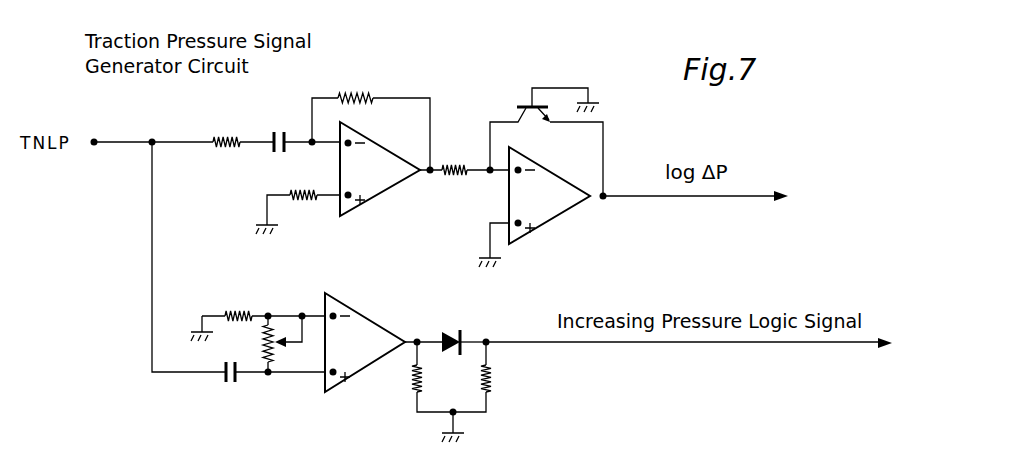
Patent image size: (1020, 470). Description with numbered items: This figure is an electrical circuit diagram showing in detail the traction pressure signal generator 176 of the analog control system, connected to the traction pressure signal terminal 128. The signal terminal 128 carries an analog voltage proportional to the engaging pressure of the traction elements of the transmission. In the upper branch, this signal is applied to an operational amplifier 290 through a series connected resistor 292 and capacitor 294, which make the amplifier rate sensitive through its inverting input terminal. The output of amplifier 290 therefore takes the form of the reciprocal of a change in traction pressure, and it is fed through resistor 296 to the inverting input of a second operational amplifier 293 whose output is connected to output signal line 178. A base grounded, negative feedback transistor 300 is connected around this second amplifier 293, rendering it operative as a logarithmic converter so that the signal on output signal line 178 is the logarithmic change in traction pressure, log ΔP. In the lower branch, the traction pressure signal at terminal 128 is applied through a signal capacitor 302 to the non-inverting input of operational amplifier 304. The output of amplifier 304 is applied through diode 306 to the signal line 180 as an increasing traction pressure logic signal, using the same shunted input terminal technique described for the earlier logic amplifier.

The traction pressure signal terminal 128 is at (95, 149).
The traction pressure signal generator 176 is at (345, 161).
The output signal line 178 is at (737, 200).
The signal line 180 is at (708, 345).
The operational amplifier 290 is at (383, 187).
The resistor 292 is at (227, 153).
The operational amplifier 293 is at (553, 205).
The capacitor 294 is at (275, 133).
The resistor 296 is at (457, 174).
The transistor 300 is at (517, 121).
The signal capacitor 302 is at (226, 385).
The operational amplifier 304 is at (360, 362).
The diode 306 is at (450, 330).